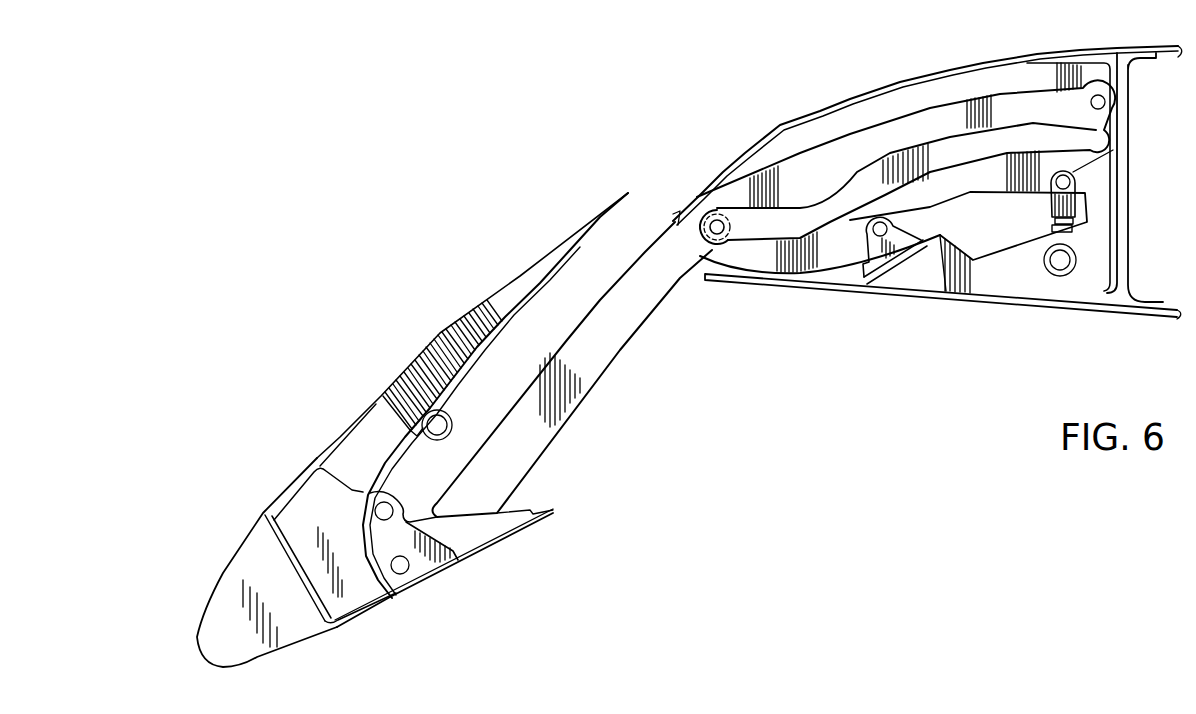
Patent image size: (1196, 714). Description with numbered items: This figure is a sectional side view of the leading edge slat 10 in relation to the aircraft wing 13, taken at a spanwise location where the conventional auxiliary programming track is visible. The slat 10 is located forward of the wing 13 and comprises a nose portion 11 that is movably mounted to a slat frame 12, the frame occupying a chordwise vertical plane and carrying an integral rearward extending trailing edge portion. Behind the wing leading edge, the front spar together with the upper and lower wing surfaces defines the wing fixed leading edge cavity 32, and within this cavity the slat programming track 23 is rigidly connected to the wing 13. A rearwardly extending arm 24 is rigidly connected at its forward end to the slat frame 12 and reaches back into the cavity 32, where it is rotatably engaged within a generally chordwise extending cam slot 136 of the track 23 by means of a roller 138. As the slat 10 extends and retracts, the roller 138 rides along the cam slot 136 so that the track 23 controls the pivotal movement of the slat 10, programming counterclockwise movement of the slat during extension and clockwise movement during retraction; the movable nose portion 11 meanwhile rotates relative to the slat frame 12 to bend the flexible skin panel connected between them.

The slat 10 is at (330, 440).
The nose portion 11 is at (212, 624).
The slat frame 12 is at (350, 503).
The wing 13 is at (780, 120).
The slat programming track 23 is at (918, 133).
The arm 24 is at (605, 345).
The wing fixed leading edge cavity 32 is at (990, 78).
The cam slot 136 is at (838, 213).
The roller 138 is at (713, 221).